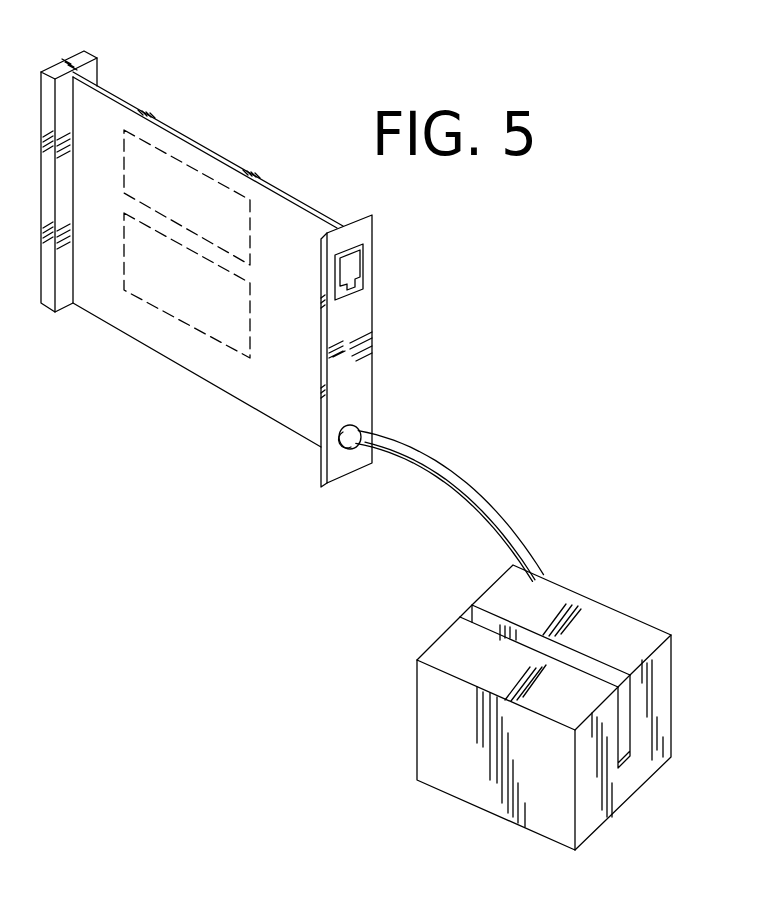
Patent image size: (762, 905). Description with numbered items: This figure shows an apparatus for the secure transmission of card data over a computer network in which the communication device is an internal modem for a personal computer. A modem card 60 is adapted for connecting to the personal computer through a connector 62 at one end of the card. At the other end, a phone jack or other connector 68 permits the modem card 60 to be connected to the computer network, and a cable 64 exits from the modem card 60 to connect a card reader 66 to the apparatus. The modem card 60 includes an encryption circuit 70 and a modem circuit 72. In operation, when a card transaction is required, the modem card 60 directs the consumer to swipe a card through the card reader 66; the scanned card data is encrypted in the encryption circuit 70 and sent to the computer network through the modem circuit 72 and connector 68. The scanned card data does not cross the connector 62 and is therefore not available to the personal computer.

The modem card 60 is at (233, 162).
The connector 62 is at (88, 52).
The cable 64 is at (485, 495).
The card reader 66 is at (673, 668).
The phone jack or other connector 68 is at (348, 265).
The encryption circuit 70 is at (200, 208).
The modem circuit 72 is at (200, 303).